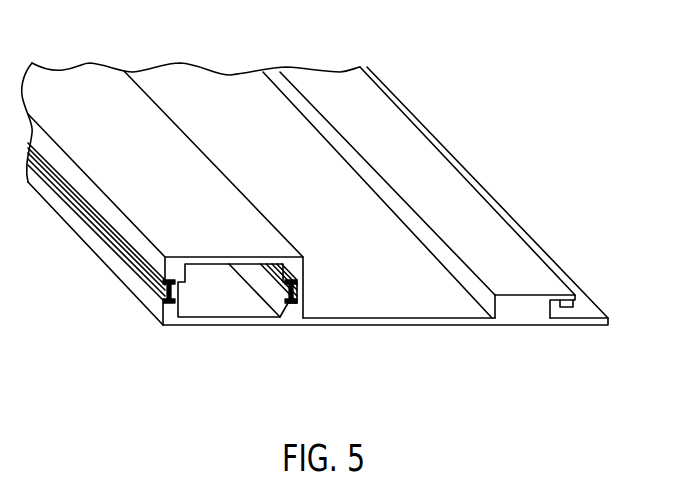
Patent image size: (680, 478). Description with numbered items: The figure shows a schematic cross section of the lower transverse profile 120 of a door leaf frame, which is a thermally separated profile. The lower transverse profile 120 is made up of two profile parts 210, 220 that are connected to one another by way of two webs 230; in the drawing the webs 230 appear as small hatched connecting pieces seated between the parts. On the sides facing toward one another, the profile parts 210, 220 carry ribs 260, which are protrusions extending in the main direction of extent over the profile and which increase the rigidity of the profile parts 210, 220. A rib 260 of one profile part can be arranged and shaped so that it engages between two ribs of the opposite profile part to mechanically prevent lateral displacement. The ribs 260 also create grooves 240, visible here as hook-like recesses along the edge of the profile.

The lower transverse profile 120 is at (520, 71).
The profile part 210 is at (82, 88).
The profile part 220 is at (220, 326).
The web 230 is at (160, 288).
The groove 240 is at (498, 297).
The rib 260 is at (210, 257).